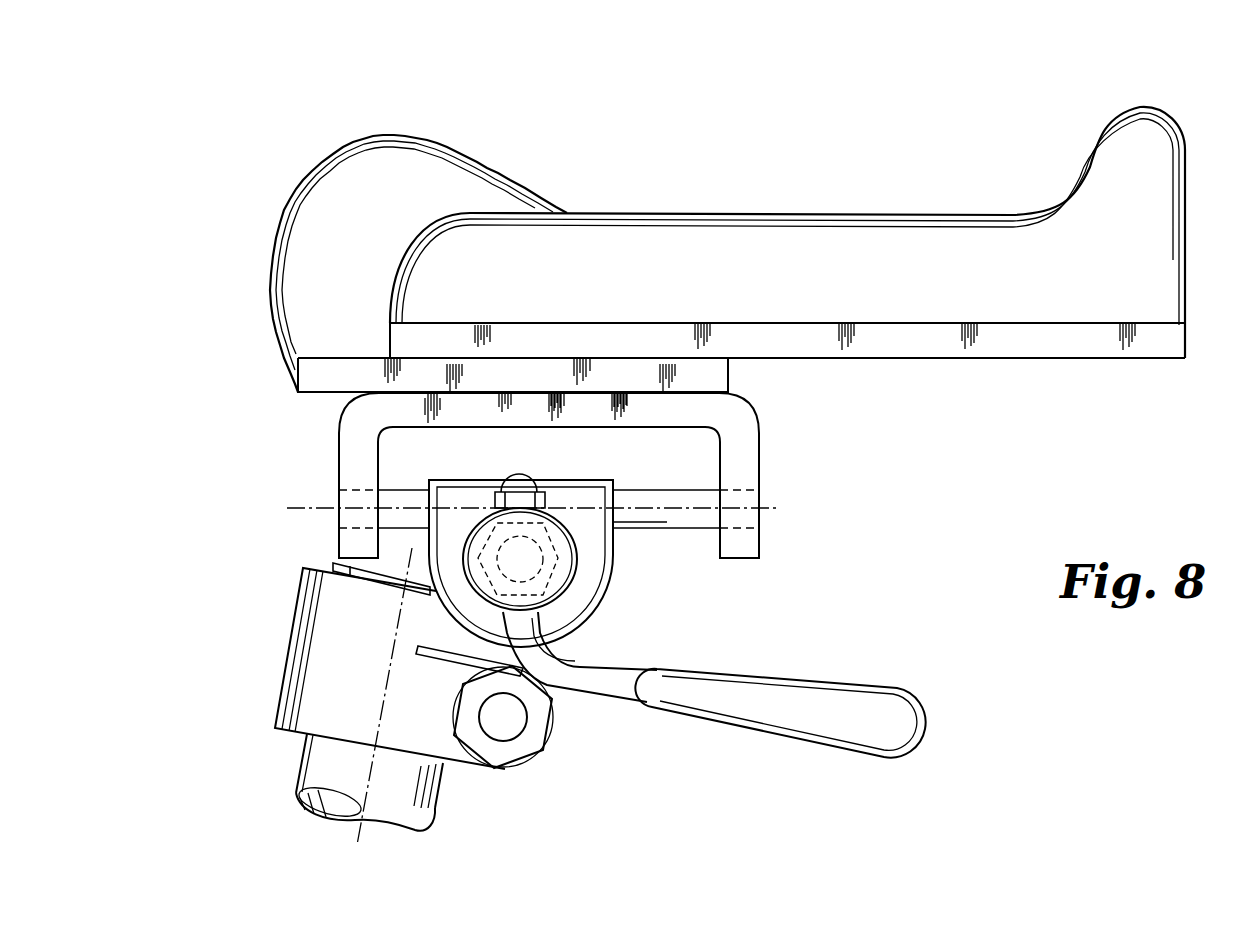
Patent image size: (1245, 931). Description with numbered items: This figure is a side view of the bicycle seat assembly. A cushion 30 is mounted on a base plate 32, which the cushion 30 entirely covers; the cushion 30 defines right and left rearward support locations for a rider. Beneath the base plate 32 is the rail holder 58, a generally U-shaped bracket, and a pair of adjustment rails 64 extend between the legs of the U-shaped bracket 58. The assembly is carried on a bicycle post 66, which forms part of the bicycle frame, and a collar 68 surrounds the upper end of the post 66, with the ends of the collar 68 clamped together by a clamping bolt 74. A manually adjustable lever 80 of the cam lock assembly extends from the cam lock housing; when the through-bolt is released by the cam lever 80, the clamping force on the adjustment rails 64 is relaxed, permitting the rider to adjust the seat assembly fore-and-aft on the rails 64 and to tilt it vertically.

The cushion 30 is at (905, 245).
The base plate 32 is at (903, 340).
The rail holder 58 is at (747, 457).
The adjustment rails 64 is at (640, 520).
The bicycle post 66 is at (413, 805).
The collar 68 is at (298, 622).
The clamping bolt 74 is at (505, 720).
The manually adjustable lever 80 is at (835, 730).